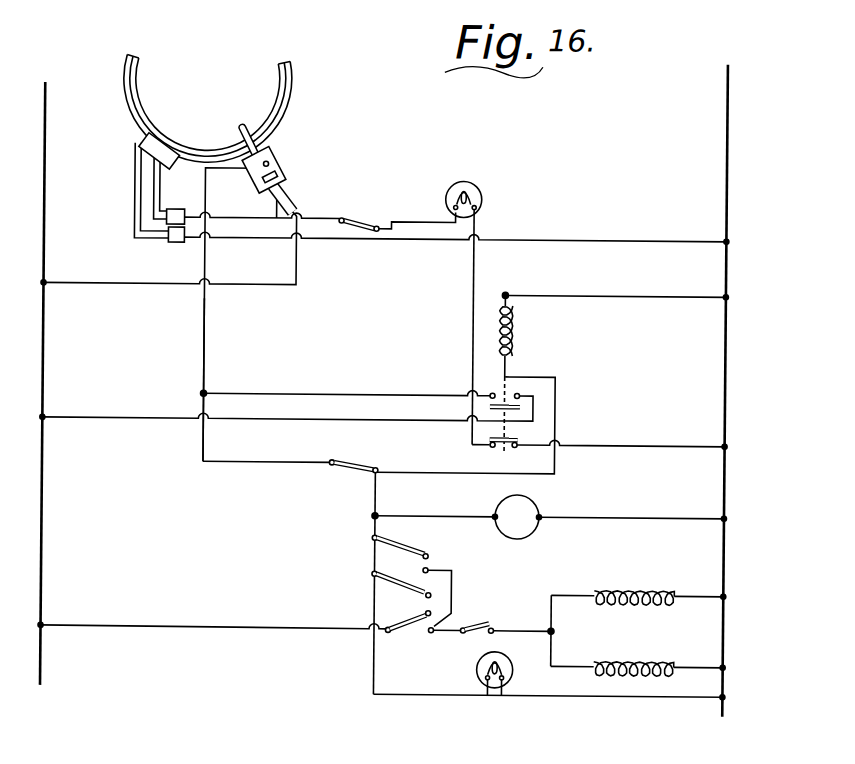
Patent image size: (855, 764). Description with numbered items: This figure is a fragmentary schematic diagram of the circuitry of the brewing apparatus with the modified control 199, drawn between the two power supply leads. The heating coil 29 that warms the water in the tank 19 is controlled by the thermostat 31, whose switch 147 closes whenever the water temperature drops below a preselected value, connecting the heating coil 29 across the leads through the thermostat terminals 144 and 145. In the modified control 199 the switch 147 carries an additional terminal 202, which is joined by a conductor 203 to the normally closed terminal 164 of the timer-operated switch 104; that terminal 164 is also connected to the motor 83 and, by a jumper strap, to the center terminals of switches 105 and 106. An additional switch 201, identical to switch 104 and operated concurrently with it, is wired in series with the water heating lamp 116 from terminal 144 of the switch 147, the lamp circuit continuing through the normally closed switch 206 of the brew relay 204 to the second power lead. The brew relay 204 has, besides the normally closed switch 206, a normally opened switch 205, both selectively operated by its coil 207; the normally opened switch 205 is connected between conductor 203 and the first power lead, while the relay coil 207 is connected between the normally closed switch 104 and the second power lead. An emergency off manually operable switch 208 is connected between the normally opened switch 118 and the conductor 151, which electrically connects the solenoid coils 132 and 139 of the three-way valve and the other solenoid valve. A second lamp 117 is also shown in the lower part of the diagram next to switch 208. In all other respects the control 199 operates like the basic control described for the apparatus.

The tank 19 is at (290, 64).
The heating coil 29 is at (148, 98).
The thermostat 31 is at (268, 160).
The additional terminal 202 is at (283, 151).
The switch 147 is at (284, 167).
The terminal of thermostat 145 is at (293, 193).
The terminal of thermostat 144 is at (270, 198).
The additional switch 201 is at (356, 226).
The water heating lamp 116 is at (479, 190).
The modified control 199 is at (580, 172).
The relay coil 207 is at (514, 336).
The brew relay 204 is at (562, 372).
The normally opened switch 205 is at (491, 392).
The normally closed switch 206 is at (507, 452).
The conductor 203 is at (205, 339).
The switch 104 is at (378, 458).
The normally closed terminal 164 is at (334, 470).
The motor 83 is at (540, 504).
The switch 105 is at (413, 548).
The switch 106 is at (406, 586).
The normally opened switch 118 is at (412, 638).
The emergency off switch 208 is at (482, 628).
The signal lamp 117 is at (517, 662).
The coil 139 is at (641, 595).
The coil 132 is at (636, 667).
The conductor 151 is at (554, 618).